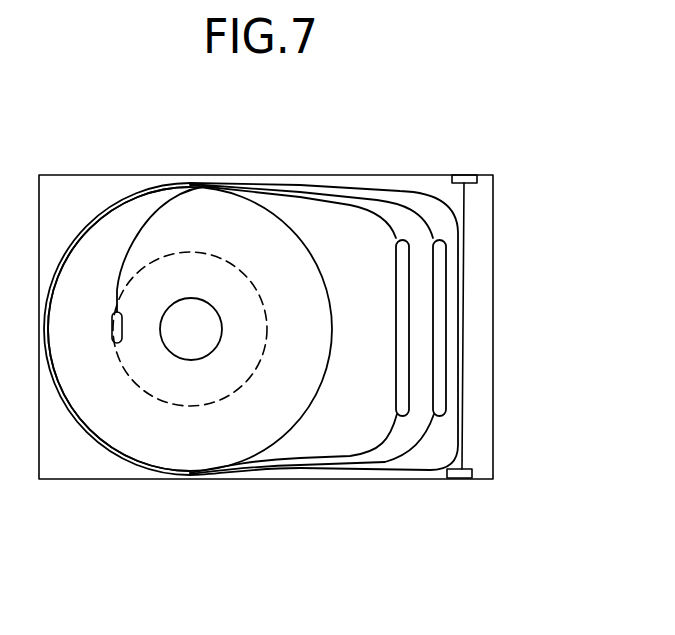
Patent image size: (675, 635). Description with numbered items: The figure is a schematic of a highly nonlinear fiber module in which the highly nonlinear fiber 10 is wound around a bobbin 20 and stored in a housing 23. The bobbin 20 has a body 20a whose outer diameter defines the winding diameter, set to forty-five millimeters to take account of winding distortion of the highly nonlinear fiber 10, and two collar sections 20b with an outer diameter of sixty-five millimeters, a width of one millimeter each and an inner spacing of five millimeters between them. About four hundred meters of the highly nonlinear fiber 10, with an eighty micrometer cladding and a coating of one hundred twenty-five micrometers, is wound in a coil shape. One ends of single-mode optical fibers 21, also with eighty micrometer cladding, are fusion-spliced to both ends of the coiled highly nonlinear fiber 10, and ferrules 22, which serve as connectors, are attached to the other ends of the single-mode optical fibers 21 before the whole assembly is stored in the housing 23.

The highly nonlinear fiber 10 is at (139, 216).
The bobbin 20 is at (215, 558).
The body 20a is at (177, 382).
The collar sections 20b is at (110, 428).
The single-mode optical fibers 21 is at (377, 212).
The ferrules 22 is at (465, 175).
The housing 23 is at (373, 480).